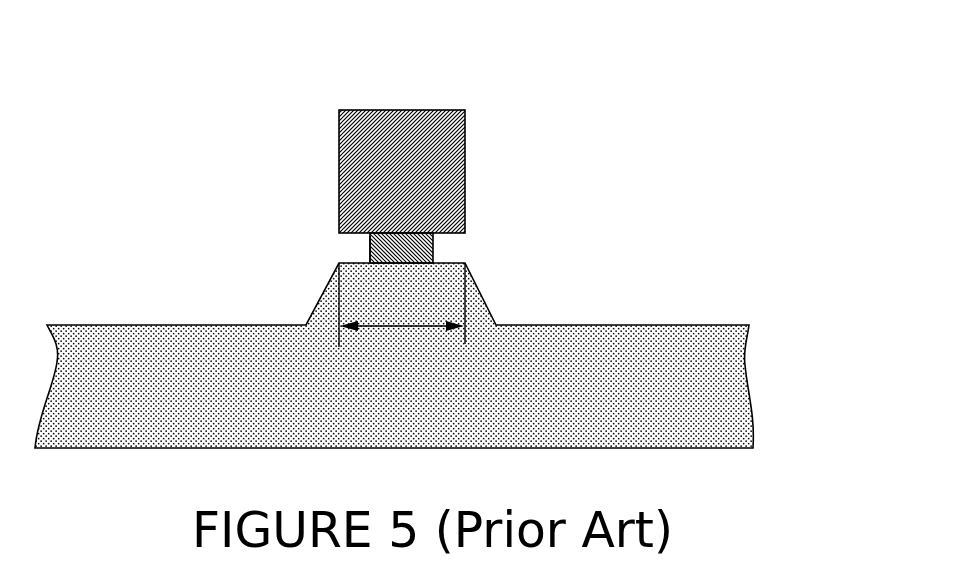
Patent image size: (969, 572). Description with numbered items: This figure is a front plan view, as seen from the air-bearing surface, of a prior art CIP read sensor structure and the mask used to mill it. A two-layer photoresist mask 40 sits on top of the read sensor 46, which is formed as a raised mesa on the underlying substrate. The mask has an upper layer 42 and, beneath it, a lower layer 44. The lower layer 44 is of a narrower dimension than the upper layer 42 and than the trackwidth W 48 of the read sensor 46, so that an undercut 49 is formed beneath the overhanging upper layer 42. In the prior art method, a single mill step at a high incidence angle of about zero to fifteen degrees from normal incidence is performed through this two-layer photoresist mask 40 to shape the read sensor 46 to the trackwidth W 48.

The 2-layer photoresist mask 40 is at (394, 227).
The upper layer 42 is at (372, 109).
The lower layer 44 is at (370, 251).
The read sensor 46 is at (494, 306).
The trackwidth W 48 is at (372, 328).
The undercut 49 is at (458, 250).